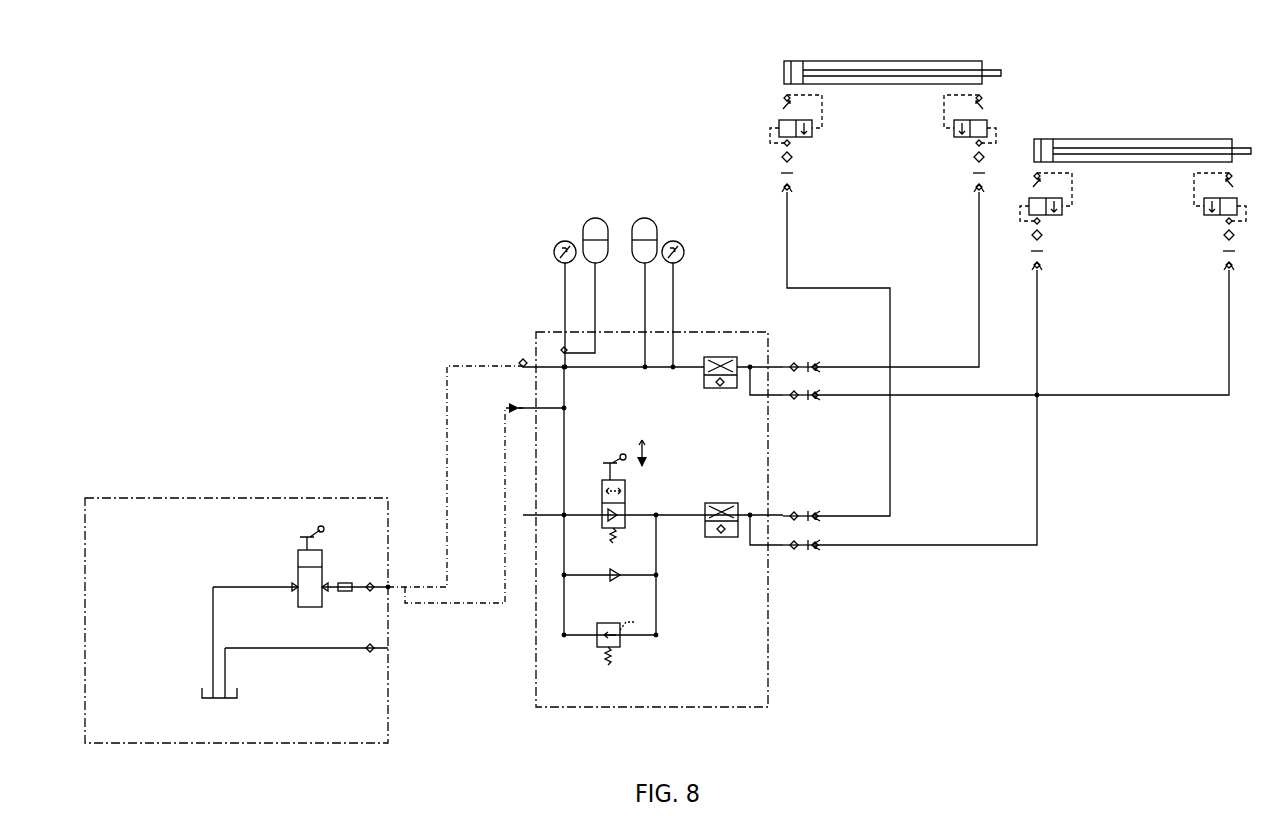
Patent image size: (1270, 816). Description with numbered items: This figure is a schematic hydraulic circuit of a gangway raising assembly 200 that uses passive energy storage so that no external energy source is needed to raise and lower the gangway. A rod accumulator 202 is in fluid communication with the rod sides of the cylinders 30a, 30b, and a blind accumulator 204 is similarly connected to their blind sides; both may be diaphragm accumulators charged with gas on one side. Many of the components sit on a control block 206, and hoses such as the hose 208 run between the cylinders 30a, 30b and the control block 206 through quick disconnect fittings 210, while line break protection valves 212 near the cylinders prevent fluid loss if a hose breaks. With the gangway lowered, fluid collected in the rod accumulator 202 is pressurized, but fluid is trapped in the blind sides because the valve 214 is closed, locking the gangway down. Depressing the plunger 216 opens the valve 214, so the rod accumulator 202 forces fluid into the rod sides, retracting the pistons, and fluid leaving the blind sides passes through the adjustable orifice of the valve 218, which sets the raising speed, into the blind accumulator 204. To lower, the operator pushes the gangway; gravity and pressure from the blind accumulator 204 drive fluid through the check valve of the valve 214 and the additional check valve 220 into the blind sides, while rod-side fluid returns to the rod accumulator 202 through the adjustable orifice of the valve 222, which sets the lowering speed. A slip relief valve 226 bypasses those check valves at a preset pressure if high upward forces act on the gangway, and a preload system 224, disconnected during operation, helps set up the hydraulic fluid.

The gangway raising assembly 200 is at (230, 326).
The cylinder 30a is at (862, 60).
The cylinder 30b is at (1137, 138).
The line break protection valves 212 is at (940, 136).
The quick disconnect fittings 210 is at (948, 176).
The hose 208 is at (1038, 492).
The blind accumulator 204 is at (598, 217).
The rod accumulator 202 is at (645, 217).
The control block 206 is at (607, 707).
The valve 222 is at (717, 350).
The valve 214 is at (640, 487).
The plunger 216 is at (609, 473).
The valve 218 is at (722, 540).
The check valve 220 is at (620, 578).
The slip relief valve 226 is at (633, 640).
The preload system 224 is at (343, 497).